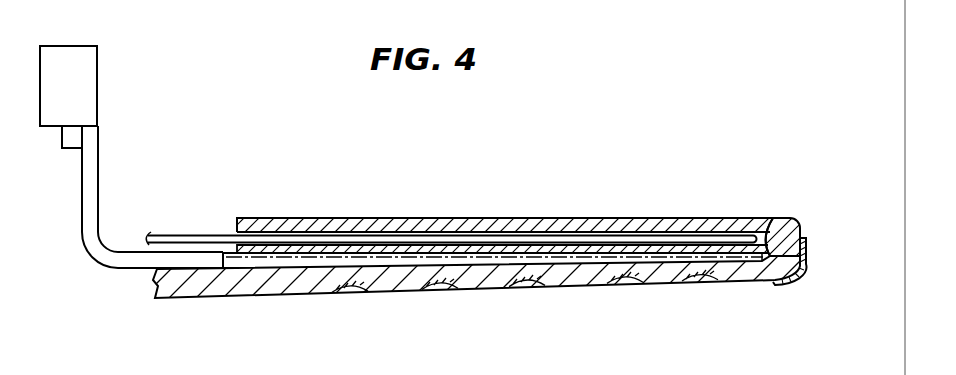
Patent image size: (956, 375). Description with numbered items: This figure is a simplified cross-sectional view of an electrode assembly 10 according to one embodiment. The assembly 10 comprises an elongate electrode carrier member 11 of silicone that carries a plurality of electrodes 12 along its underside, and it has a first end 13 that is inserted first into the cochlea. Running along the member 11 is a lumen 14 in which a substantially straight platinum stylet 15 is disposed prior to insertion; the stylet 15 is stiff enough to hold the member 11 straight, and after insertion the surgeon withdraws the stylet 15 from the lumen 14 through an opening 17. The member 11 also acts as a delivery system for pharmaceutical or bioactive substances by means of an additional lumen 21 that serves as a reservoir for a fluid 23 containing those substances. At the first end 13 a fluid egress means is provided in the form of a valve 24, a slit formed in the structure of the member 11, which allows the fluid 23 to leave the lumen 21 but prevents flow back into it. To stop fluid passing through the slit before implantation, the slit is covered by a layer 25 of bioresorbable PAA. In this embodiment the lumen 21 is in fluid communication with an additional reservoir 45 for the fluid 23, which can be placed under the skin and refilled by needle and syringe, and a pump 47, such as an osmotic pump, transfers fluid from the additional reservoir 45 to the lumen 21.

The electrode assembly 10 is at (674, 133).
The elongate electrode carrier member 11 is at (258, 297).
The electrodes 12 is at (348, 294).
The first end 13 is at (795, 220).
The lumen 14 is at (352, 218).
The stylet 15 is at (175, 236).
The opening 17 is at (236, 236).
The additional lumen 21 is at (573, 262).
The fluid 23 is at (479, 257).
The valve 24 is at (770, 222).
The layer of bioresorbable PAA 25 is at (798, 273).
The additional reservoir 45 is at (70, 45).
The pump 47 is at (65, 152).